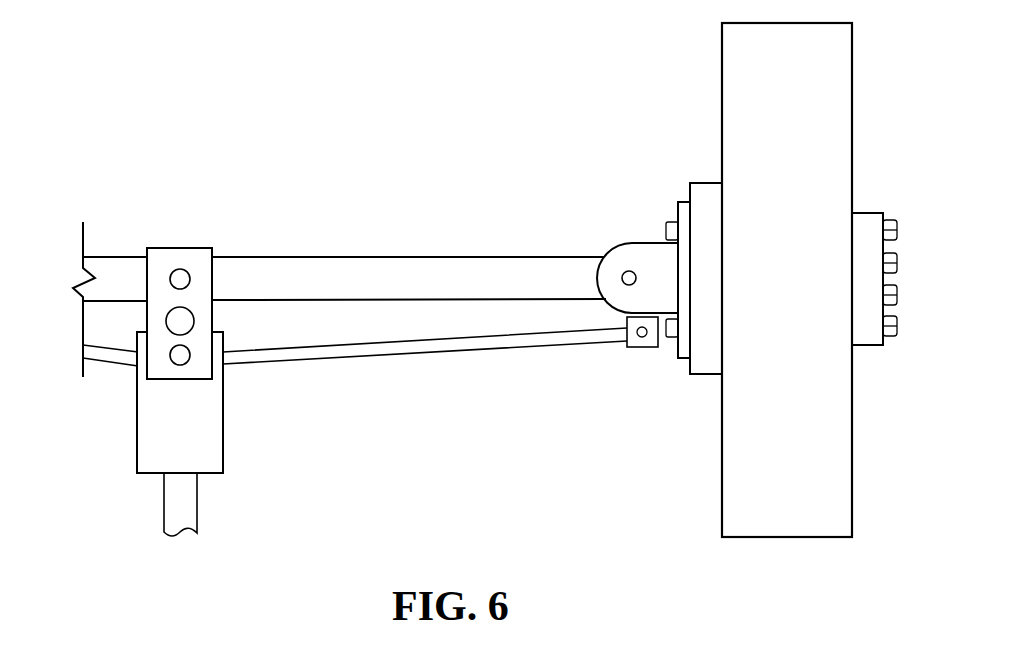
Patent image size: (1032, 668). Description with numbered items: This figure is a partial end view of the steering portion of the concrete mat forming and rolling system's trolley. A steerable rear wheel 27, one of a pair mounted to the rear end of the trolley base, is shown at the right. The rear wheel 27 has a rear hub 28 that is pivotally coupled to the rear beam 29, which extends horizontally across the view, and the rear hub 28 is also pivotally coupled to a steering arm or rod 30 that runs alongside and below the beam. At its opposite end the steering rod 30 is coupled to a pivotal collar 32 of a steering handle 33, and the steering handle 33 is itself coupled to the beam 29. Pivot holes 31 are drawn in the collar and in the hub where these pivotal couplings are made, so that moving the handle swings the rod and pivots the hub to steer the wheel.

The rear wheel 27 is at (847, 139).
The rear hub 28 is at (613, 248).
The rear beam 29 is at (453, 265).
The steering rod 30 is at (562, 345).
The holes 31 is at (182, 277).
The pivotal collar 32 is at (156, 262).
The steering handle 33 is at (178, 501).